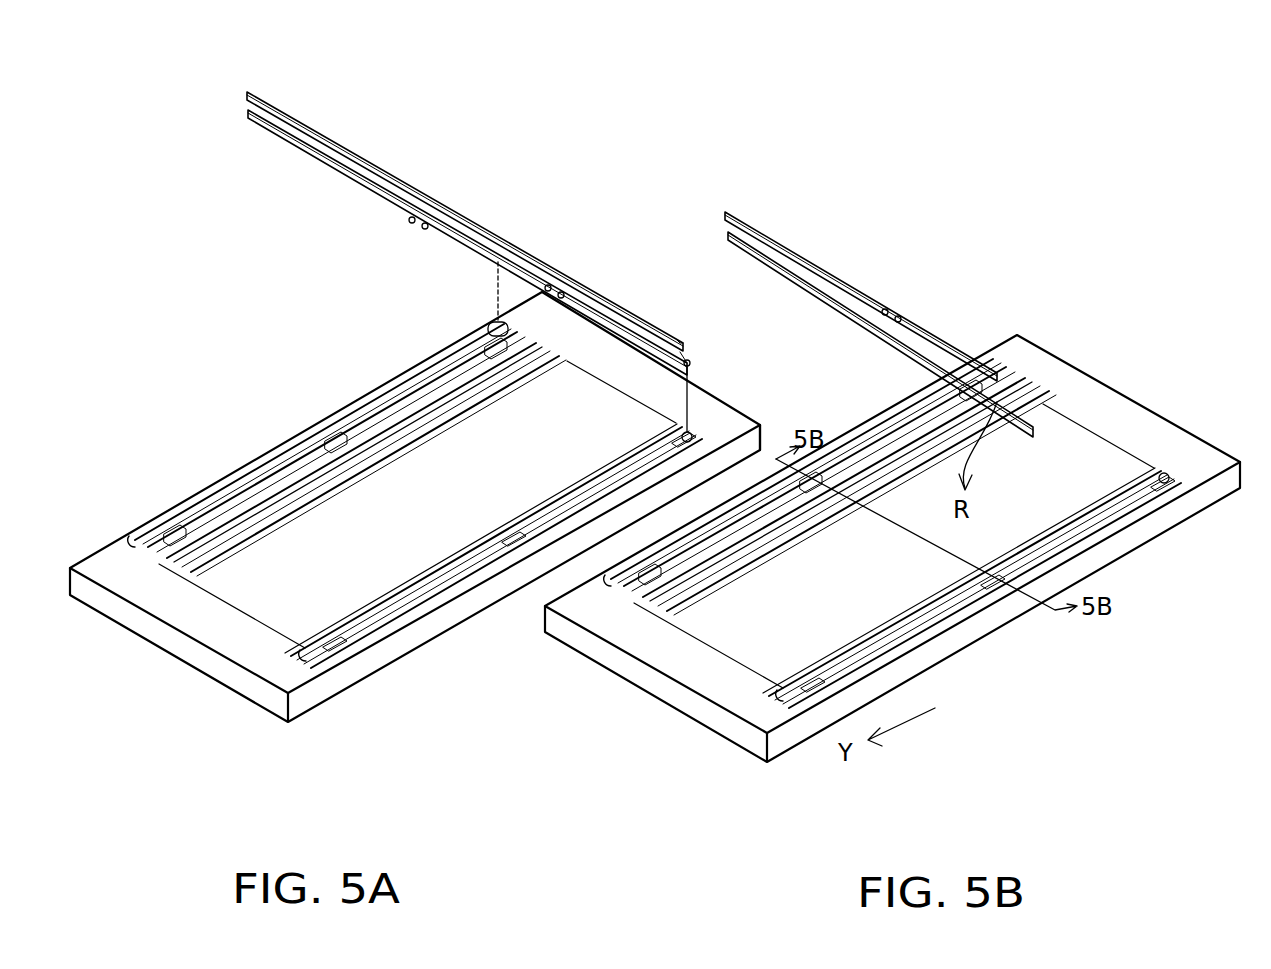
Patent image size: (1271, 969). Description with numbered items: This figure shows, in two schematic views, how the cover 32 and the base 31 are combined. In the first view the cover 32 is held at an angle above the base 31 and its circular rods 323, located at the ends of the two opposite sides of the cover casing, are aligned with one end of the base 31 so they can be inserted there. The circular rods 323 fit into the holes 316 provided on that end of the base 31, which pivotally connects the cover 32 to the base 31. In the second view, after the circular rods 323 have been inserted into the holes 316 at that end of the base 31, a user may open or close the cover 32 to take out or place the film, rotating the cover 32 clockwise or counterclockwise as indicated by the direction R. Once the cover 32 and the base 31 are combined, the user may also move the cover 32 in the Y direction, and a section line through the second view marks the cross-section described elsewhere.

In FIG. 5A, the base 31 is at (420, 693).
In FIG. 5B, the base 31 is at (1030, 668).
In FIG. 5A, the cover 32 is at (421, 152).
In FIG. 5B, the cover 32 is at (904, 277).
In FIG. 5A, the circular rods 323 is at (690, 364).
In FIG. 5A, the holes 316 is at (762, 428).